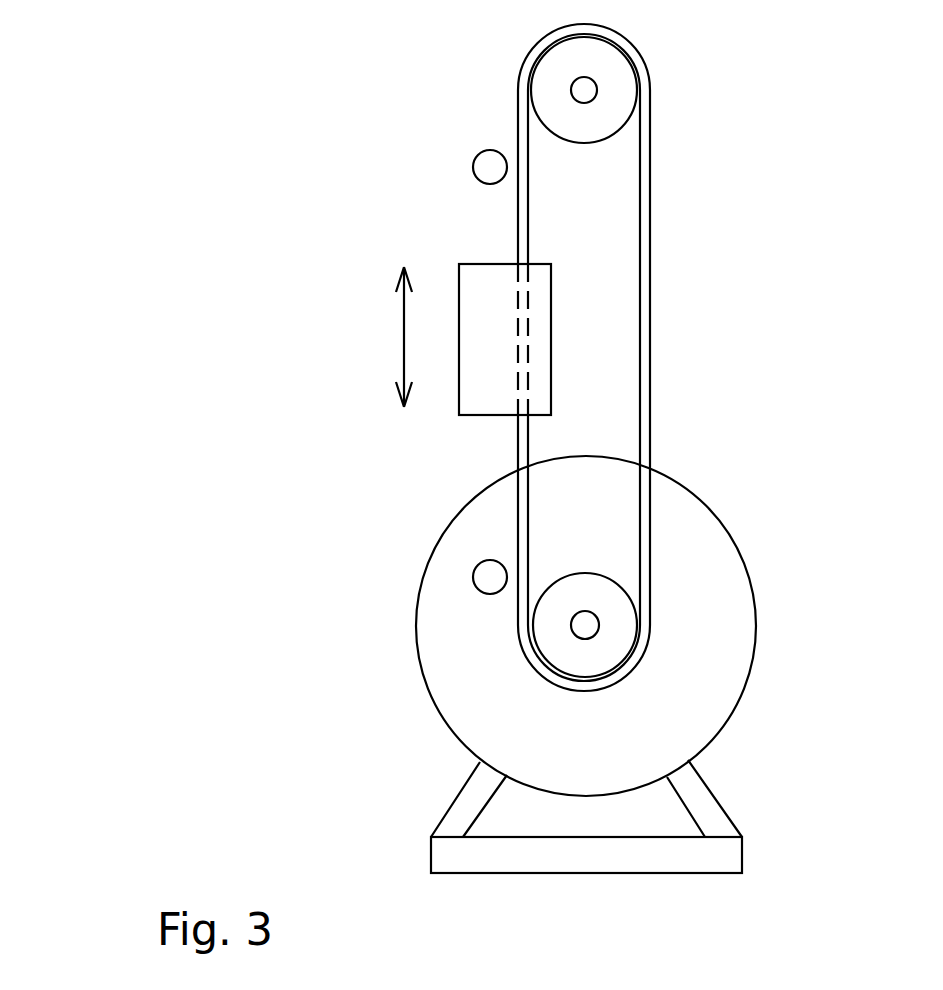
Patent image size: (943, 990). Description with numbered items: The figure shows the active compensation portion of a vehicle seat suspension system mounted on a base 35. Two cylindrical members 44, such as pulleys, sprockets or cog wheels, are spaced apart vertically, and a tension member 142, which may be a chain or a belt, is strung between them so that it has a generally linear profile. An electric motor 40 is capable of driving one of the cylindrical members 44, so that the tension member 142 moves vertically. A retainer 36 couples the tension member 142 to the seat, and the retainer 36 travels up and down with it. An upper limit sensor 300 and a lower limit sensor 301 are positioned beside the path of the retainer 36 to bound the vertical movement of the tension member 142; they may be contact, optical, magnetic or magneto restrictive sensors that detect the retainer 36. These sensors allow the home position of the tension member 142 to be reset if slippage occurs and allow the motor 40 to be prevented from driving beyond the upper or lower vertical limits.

The base 35 is at (742, 855).
The retainer 36 is at (462, 282).
The electric motor 40 is at (715, 517).
The cylindrical members 44 is at (620, 78).
The tension member 142 is at (650, 227).
The upper limit sensor 300 is at (477, 158).
The lower limit sensor 301 is at (473, 576).